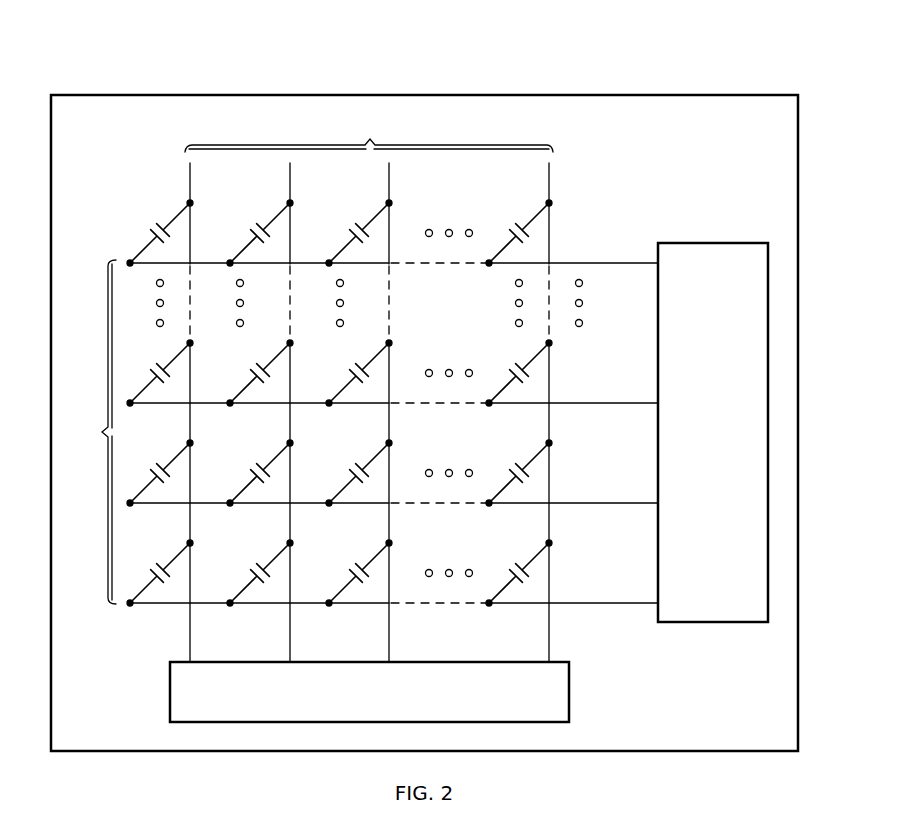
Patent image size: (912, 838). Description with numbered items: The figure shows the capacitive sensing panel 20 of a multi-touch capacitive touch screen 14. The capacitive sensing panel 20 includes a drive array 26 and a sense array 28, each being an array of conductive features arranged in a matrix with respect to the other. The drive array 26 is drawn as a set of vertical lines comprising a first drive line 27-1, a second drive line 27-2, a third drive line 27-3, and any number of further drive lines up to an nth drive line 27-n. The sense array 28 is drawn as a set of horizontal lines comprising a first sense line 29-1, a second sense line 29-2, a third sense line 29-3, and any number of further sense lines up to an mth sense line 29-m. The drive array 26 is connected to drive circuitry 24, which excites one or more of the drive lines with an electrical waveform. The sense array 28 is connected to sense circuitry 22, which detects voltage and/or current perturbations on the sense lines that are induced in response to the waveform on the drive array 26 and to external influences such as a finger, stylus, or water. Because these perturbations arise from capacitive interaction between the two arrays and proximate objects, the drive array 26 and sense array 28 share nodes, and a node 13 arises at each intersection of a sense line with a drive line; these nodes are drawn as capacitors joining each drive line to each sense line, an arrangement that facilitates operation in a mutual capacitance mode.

The node 13 is at (193, 255).
The multi-touch capacitive touch screen 14 is at (557, 53).
The capacitive sensing panel 20 is at (260, 94).
The sense circuitry 22 is at (701, 474).
The drive circuitry 24 is at (168, 694).
The drive array 26 is at (369, 131).
The first drive line 27-1 is at (187, 186).
The second drive line 27-2 is at (287, 186).
The third drive line 27-3 is at (386, 186).
The nth drive line 27-n is at (551, 185).
The sense array 28 is at (94, 432).
The first sense line 29-1 is at (605, 607).
The second sense line 29-2 is at (605, 507).
The third sense line 29-3 is at (605, 407).
The mth sense line 29-m is at (605, 267).